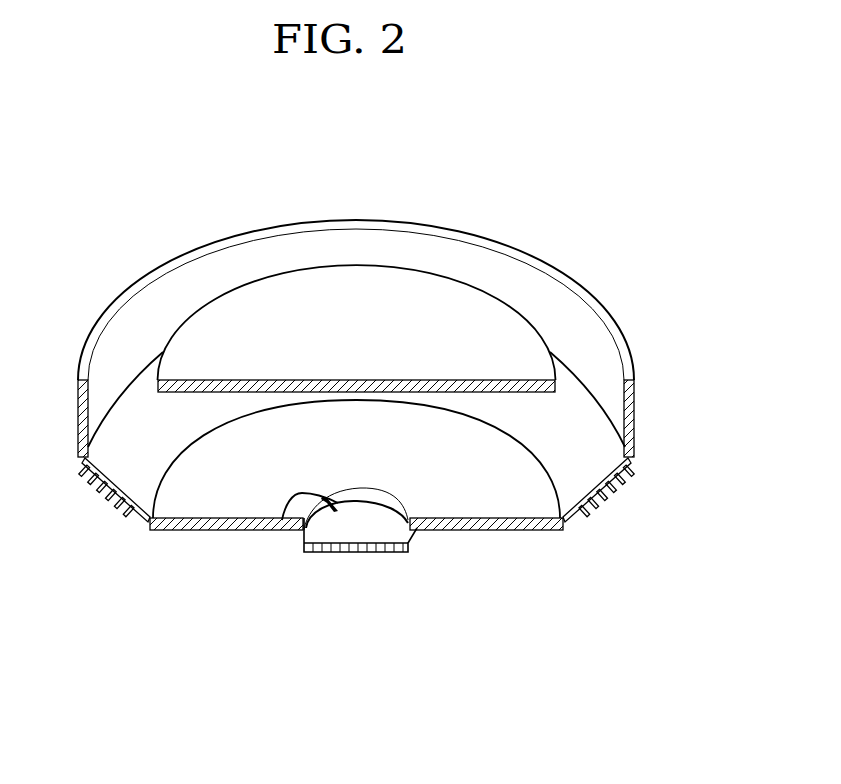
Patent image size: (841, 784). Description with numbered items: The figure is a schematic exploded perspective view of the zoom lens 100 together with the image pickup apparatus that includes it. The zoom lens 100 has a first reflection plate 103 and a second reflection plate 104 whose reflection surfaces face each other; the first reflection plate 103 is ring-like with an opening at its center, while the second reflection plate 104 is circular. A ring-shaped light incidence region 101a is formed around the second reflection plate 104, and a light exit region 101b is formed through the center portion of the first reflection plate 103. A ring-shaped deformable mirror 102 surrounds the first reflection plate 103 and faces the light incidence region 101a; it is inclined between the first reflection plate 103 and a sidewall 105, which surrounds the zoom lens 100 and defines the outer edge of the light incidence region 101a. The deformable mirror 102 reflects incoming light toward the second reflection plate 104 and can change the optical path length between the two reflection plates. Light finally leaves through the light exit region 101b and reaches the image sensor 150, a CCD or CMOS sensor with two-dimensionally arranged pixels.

The zoom lens 100 is at (655, 206).
The light incidence region 101a is at (585, 330).
The light exit region 101b is at (282, 520).
The deformable mirror 102 is at (610, 500).
The first reflection plate 103 is at (493, 530).
The second reflection plate 104 is at (418, 287).
The sidewall 105 is at (636, 405).
The image sensor 150 is at (360, 552).